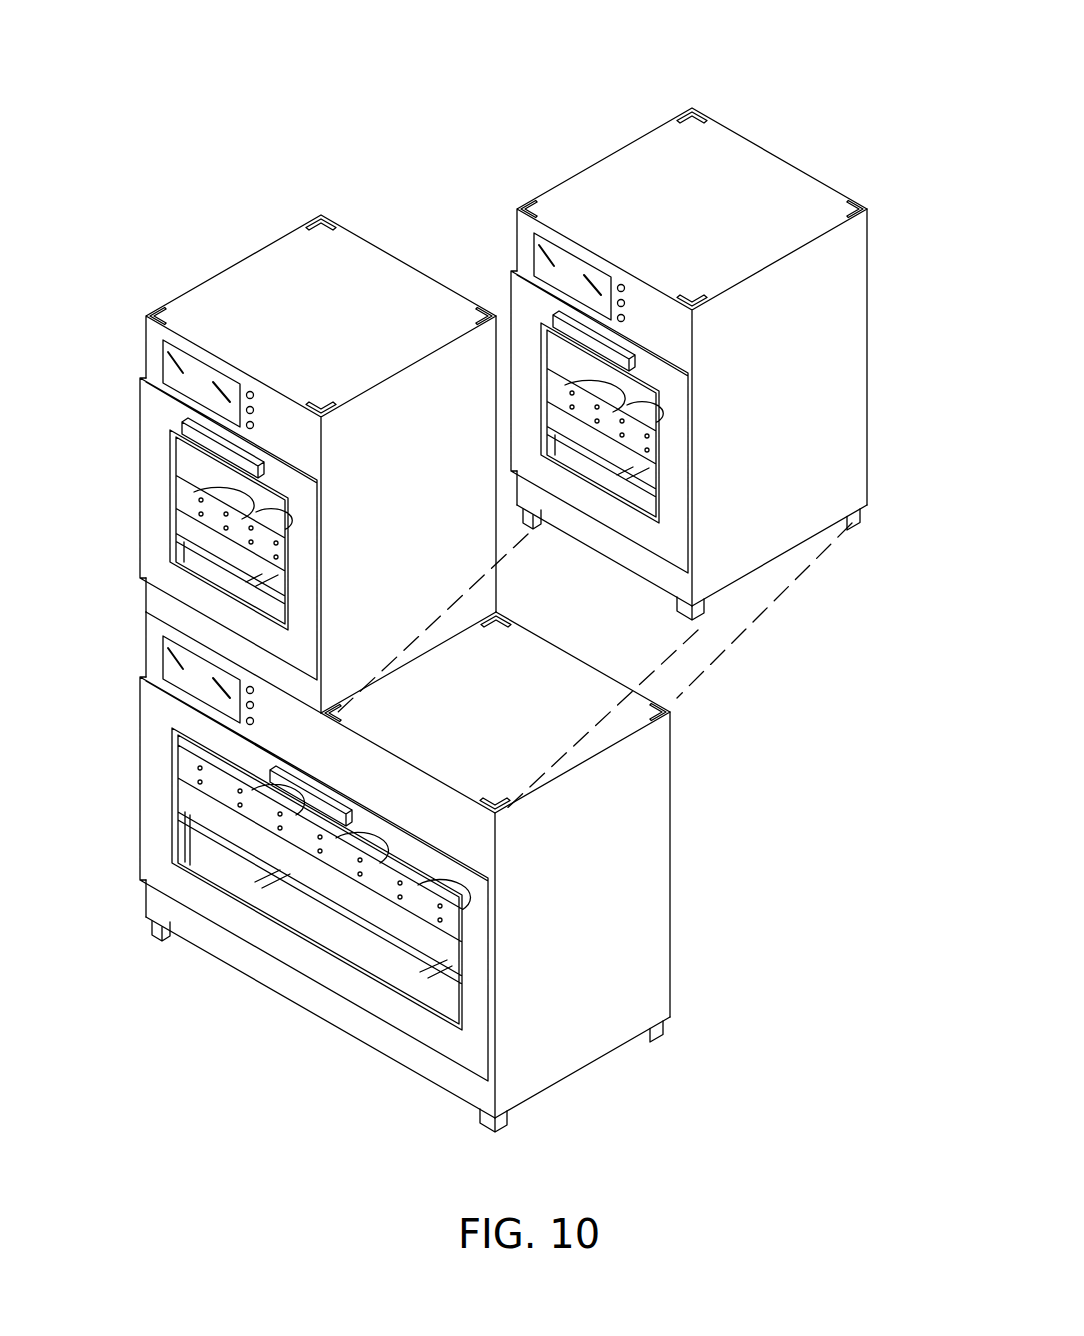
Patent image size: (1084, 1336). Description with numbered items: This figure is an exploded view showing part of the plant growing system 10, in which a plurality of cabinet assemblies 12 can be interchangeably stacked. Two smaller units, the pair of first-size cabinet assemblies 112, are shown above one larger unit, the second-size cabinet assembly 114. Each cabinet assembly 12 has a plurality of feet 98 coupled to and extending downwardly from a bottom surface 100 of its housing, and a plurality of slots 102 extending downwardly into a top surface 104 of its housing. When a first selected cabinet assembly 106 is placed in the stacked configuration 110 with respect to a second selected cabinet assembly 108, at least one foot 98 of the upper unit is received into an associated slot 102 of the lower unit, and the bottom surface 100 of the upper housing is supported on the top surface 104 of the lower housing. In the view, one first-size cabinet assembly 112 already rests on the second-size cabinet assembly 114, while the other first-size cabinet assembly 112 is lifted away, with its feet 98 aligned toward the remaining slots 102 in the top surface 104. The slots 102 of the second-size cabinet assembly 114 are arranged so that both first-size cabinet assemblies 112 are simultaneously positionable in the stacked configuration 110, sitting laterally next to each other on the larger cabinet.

The plant growing system 10 is at (362, 86).
The cabinet assembly 12 is at (210, 212).
The feet 98 is at (532, 535).
The bottom surface 100 is at (767, 566).
The slots 102 is at (699, 731).
The top surface 104 is at (567, 683).
The first selected cabinet assembly 106 is at (913, 237).
The second selected cabinet assembly 108 is at (725, 960).
The stacked configuration 110 is at (90, 758).
The first-size cabinet assemblies 112 is at (911, 391).
The second-size cabinet assembly 114 is at (250, 1047).